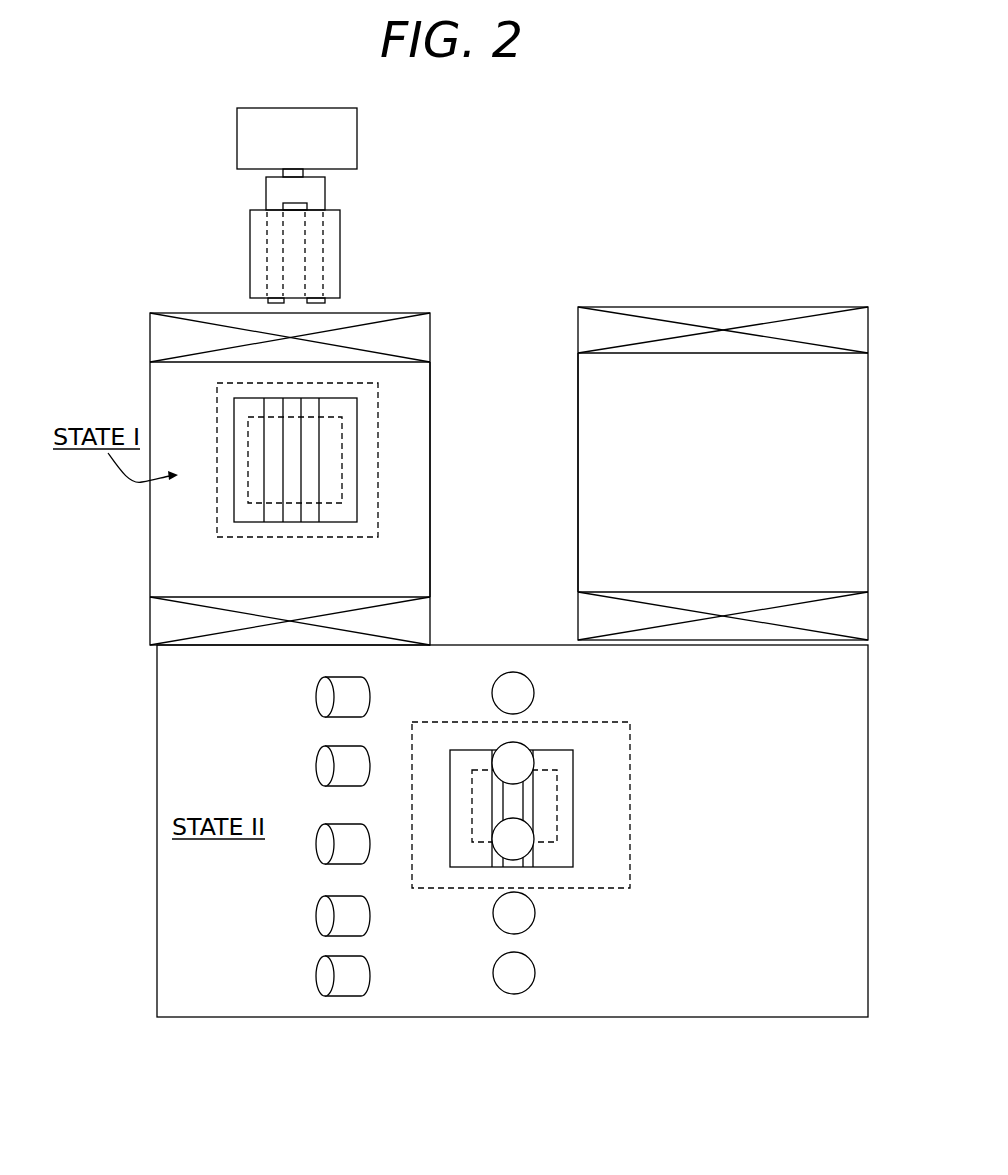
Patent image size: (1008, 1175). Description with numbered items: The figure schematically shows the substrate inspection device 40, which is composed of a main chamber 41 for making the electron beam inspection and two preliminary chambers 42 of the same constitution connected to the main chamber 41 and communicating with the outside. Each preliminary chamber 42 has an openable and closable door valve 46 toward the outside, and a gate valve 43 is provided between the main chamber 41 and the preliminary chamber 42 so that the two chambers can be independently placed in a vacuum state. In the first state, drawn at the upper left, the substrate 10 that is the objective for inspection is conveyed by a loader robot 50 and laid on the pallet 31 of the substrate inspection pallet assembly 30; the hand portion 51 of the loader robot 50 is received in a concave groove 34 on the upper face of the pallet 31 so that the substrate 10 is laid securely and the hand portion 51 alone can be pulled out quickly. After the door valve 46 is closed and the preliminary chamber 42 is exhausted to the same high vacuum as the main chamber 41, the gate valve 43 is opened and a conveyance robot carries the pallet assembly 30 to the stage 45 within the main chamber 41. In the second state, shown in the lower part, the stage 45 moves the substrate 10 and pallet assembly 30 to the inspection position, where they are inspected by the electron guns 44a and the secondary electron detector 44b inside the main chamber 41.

The substrate 10 is at (333, 258).
The substrate inspection pallet assembly 30 is at (362, 424).
The pallet 31 is at (234, 432).
The concave groove 34 is at (312, 518).
The substrate inspection device 40 is at (552, 166).
The main chamber 41 is at (182, 733).
The preliminary chamber 42 is at (423, 465).
The gate valve 43 is at (423, 623).
The electron guns 44a is at (532, 750).
The secondary electron detector 44b is at (319, 762).
The stage 45 is at (632, 745).
The door valve 46 is at (423, 338).
The loader robot 50 is at (325, 145).
The hand portion 51 is at (313, 203).